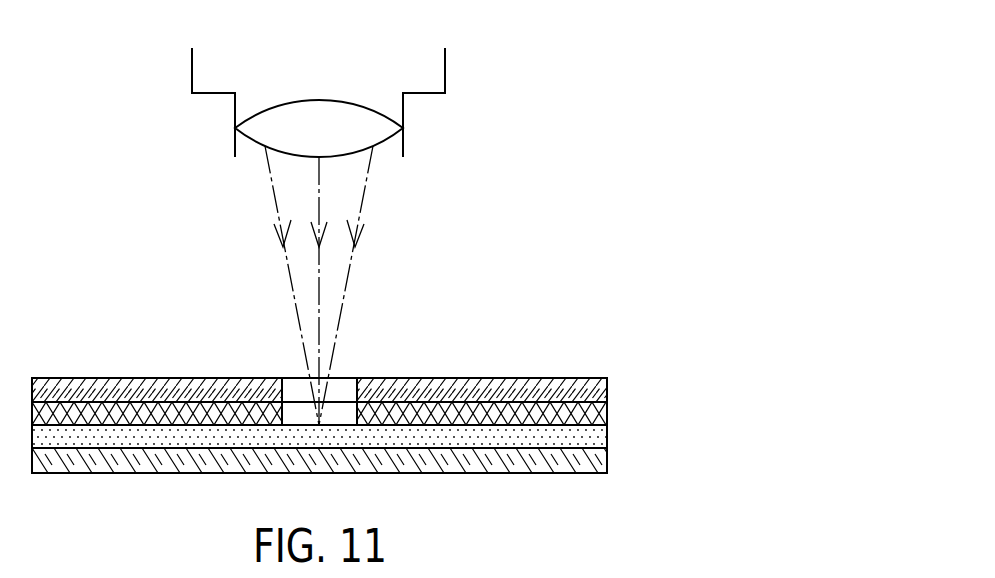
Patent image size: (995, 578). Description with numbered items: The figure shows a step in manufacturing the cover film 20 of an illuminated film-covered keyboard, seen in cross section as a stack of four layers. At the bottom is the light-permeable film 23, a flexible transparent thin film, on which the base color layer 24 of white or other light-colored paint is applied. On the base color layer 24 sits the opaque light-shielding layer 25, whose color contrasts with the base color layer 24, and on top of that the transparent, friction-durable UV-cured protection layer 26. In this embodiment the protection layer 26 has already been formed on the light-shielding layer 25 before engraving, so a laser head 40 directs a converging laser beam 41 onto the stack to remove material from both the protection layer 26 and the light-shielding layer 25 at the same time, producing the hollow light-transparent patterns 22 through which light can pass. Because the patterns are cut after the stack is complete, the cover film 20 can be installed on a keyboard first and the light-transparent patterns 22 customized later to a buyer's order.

The cover film 20 is at (88, 376).
The light-transparent patterns 22 is at (340, 392).
The light-permeable film 23 is at (589, 460).
The base color layer 24 is at (589, 432).
The light-shielding layer 25 is at (598, 408).
The protection layer 26 is at (598, 390).
The laser head 40 is at (375, 125).
The laser beam 41 is at (345, 283).